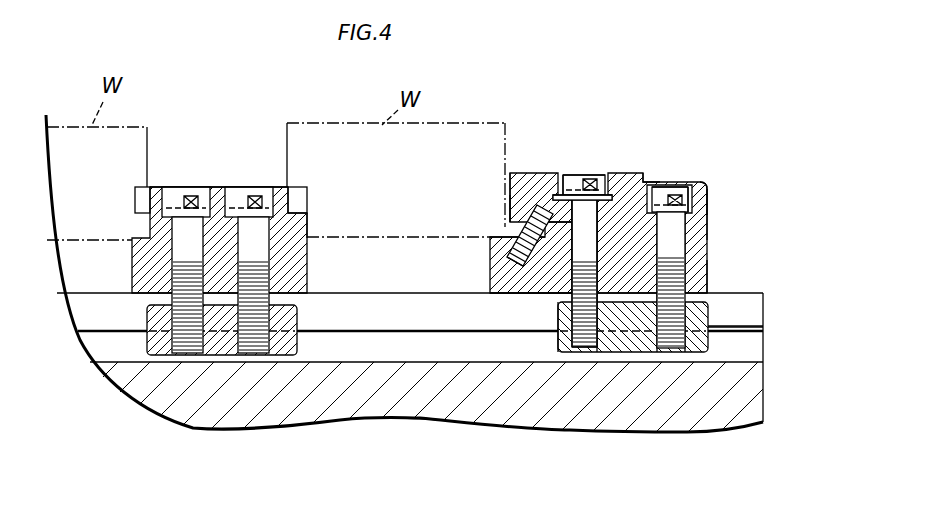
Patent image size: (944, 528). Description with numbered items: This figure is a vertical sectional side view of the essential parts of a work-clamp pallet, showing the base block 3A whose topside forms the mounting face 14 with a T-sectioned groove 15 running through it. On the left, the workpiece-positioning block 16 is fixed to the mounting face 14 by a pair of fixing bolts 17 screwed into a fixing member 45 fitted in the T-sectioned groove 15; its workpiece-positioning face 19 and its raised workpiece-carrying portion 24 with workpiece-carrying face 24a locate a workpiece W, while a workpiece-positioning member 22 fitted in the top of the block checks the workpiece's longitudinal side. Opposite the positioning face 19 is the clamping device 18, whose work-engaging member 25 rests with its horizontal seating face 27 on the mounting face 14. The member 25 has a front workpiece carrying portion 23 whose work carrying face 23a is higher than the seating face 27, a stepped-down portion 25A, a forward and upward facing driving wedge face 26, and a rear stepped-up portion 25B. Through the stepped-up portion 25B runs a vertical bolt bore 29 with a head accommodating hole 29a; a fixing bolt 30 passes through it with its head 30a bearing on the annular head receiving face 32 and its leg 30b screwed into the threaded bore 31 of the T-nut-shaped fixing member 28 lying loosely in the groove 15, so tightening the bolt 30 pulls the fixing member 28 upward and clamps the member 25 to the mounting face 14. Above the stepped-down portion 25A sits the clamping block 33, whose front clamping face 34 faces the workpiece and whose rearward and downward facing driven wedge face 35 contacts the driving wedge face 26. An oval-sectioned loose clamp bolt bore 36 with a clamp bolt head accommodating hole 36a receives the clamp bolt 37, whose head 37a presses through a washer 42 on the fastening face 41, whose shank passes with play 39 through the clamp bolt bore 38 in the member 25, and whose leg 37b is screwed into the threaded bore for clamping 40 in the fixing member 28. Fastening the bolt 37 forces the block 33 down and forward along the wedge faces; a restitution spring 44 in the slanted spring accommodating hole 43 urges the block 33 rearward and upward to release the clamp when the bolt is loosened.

The base block 3A is at (425, 400).
The topside (mounting face) of the base block 14 is at (341, 299).
The T-sectioned groove 15 is at (328, 366).
The workpiece-positioning block 16 is at (246, 150).
The fixing bolts 17 is at (250, 235).
The clamping device 18 is at (575, 125).
The workpiece-positioning face 19 is at (290, 200).
The workpiece-positioning member 22 is at (140, 192).
The workpiece carrying portion 23 is at (490, 262).
The work carrying face 23a is at (487, 238).
The workpiece-carrying portion 24 is at (307, 270).
The workpiece-carrying face 24a is at (306, 237).
The work-engaging member 25 is at (708, 247).
The stepped-down portion 25A is at (553, 345).
The stepped-up portion 25B is at (708, 232).
The driving wedge face 26 is at (630, 182).
The seating face 27 is at (545, 290).
The fixing member 28 is at (605, 320).
The bolt bore 29 is at (708, 290).
The head accommodating hole 29a is at (704, 192).
The fixing bolt 30 is at (712, 320).
The head of fixing bolt 30a is at (690, 186).
The leg of fixing bolt 30b is at (763, 327).
The threaded bore 31 is at (685, 340).
The annular head receiving face 32 is at (708, 184).
The clamping block 33 is at (540, 190).
The clamping face 34 is at (512, 180).
The driven wedge face 35 is at (660, 185).
The clamp bolt bore 36 is at (590, 176).
The clamp bolt head accommodating hole 36a is at (612, 180).
The clamp bolt 37 is at (575, 300).
The clamp bolt head 37a is at (565, 178).
The leg of clamp bolt 37b is at (586, 300).
The clamp bolt bore 38 is at (645, 320).
The play 39 is at (598, 180).
The threaded bore for clamping 40 is at (603, 330).
The fastening face 41 is at (510, 200).
The washer 42 is at (512, 210).
The slanted spring accommodating hole 43 is at (525, 284).
The restitution spring 44 is at (538, 318).
The fixing member 45 is at (222, 338).